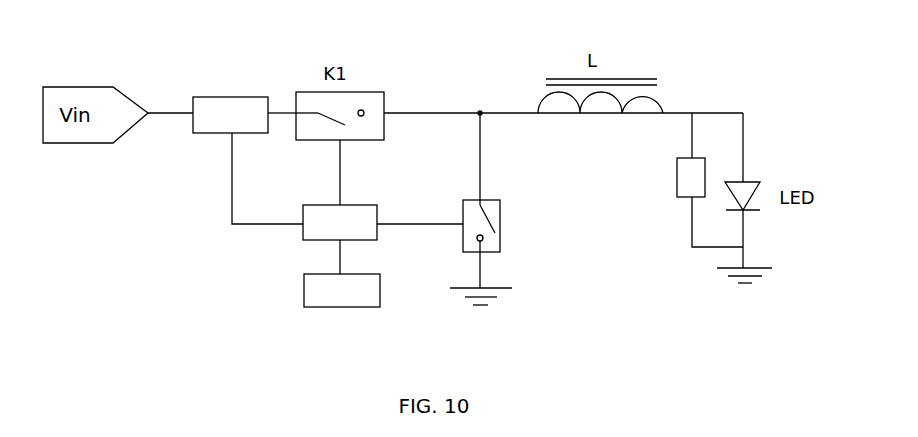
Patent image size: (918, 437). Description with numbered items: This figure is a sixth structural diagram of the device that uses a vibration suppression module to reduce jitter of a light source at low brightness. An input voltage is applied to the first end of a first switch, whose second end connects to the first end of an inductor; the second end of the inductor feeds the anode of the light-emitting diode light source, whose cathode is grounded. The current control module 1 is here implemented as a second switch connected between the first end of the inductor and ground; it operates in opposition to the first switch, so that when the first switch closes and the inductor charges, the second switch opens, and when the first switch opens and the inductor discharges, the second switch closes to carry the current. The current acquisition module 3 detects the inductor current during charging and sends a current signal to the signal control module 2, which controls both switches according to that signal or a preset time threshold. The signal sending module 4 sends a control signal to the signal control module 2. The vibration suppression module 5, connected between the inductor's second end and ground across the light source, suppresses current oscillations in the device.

The current control module 1 is at (507, 233).
The signal control module 2 is at (318, 230).
The current acquisition module 3 is at (220, 120).
The signal sending module 4 is at (338, 298).
The vibration suppression module 5 is at (691, 173).